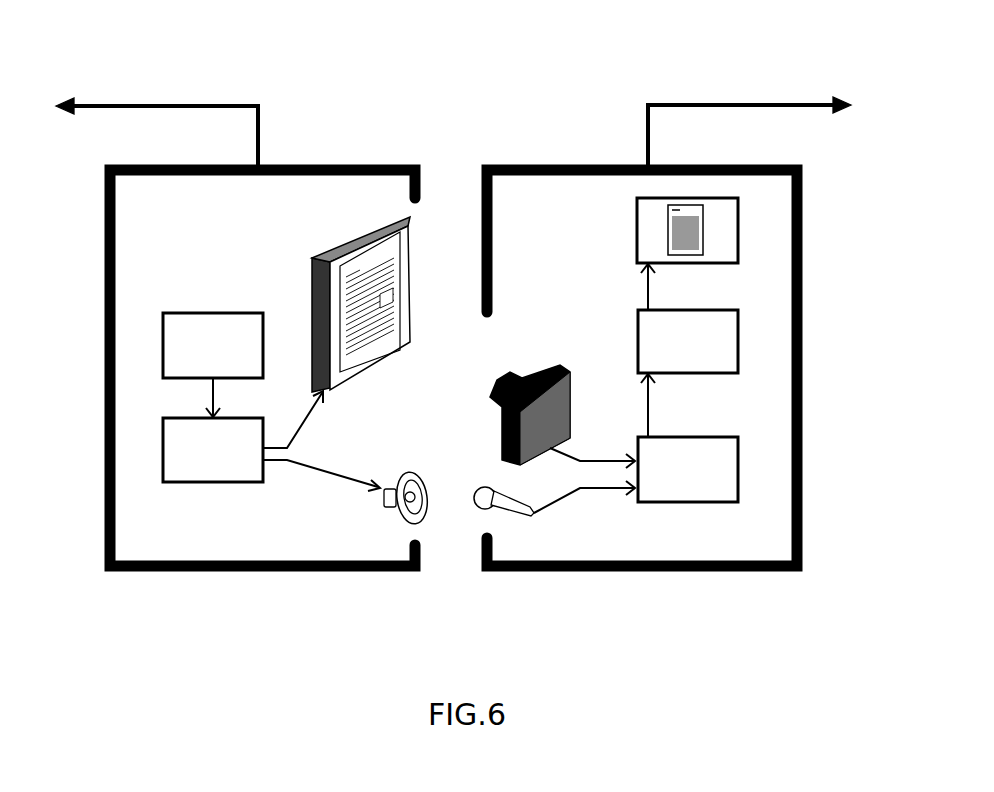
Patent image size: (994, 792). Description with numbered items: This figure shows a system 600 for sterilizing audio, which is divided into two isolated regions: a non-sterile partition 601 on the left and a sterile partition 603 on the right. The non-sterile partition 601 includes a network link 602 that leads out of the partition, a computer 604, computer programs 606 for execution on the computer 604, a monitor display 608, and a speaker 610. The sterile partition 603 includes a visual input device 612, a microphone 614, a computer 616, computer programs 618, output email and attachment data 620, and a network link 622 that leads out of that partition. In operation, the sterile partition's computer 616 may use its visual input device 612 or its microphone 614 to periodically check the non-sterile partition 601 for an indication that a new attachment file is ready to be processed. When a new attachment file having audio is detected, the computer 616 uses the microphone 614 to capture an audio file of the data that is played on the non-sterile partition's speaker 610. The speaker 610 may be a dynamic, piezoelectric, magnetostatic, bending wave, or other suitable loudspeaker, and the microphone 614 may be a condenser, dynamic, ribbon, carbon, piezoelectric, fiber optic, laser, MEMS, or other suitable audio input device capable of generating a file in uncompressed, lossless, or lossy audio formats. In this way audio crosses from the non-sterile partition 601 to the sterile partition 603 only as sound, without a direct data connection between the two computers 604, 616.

The system 600 is at (228, 60).
The non-sterile partition 601 is at (343, 595).
The network link 602 is at (118, 108).
The sterile partition 603 is at (542, 597).
The computer 604 is at (232, 308).
The computer programs 606 is at (236, 488).
The monitor display 608 is at (372, 218).
The speaker 610 is at (411, 470).
The visual input device 612 is at (523, 378).
The microphone 614 is at (505, 517).
The computer 616 is at (703, 508).
The computer programs 618 is at (707, 380).
The output email and attachment data 620 is at (633, 245).
The network link 622 is at (805, 122).